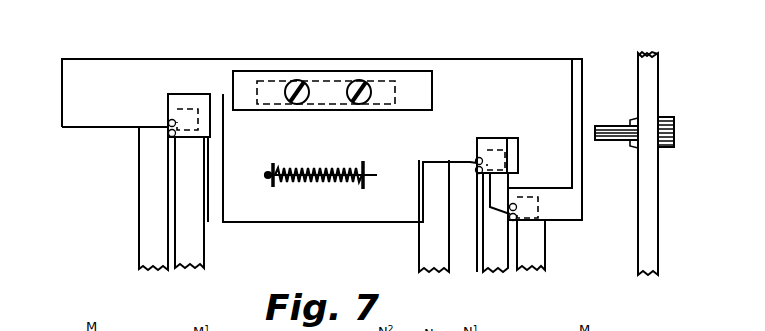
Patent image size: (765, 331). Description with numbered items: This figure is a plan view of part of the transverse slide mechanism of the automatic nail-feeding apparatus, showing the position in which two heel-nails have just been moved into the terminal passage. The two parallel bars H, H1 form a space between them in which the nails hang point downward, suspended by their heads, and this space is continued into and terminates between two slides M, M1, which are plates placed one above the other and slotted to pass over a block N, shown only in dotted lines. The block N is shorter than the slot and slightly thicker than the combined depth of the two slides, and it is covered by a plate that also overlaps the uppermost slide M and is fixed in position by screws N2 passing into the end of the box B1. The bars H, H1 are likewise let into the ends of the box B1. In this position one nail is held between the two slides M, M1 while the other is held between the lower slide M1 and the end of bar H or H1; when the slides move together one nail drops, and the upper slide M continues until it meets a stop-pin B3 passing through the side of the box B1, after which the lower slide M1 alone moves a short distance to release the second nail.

The upper transverse slide M is at (92, 70).
The lower transverse slide M1 is at (178, 108).
The block N is at (384, 91).
The screws N2 is at (297, 90).
The box B1 is at (648, 74).
The stop-pin B3 is at (612, 127).
The parallel bar H is at (165, 265).
The parallel bar H1 is at (197, 256).